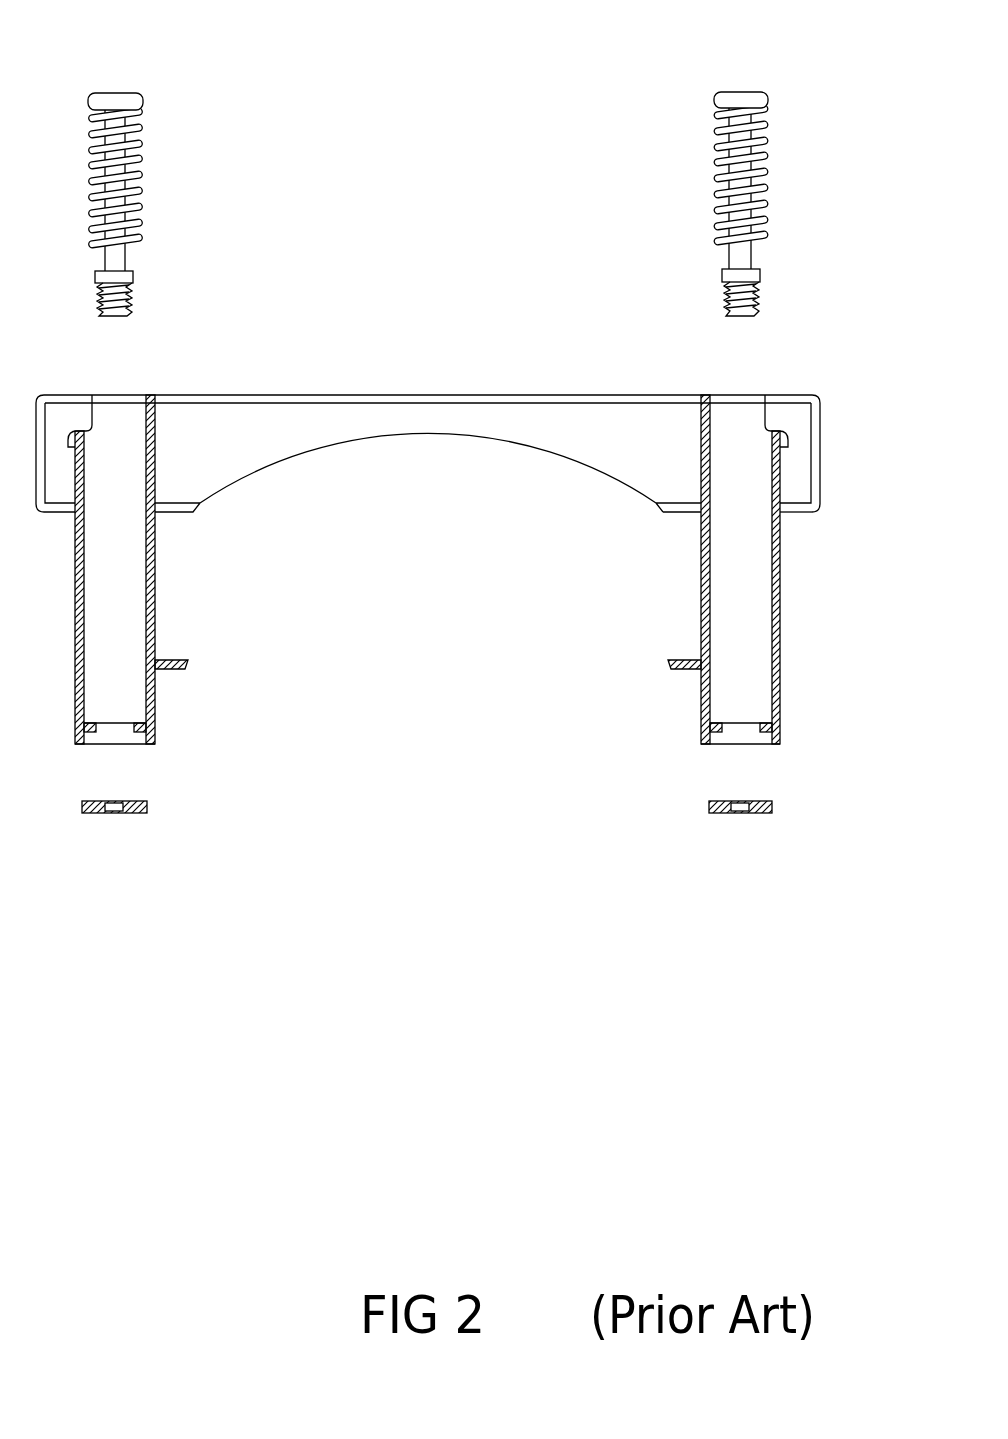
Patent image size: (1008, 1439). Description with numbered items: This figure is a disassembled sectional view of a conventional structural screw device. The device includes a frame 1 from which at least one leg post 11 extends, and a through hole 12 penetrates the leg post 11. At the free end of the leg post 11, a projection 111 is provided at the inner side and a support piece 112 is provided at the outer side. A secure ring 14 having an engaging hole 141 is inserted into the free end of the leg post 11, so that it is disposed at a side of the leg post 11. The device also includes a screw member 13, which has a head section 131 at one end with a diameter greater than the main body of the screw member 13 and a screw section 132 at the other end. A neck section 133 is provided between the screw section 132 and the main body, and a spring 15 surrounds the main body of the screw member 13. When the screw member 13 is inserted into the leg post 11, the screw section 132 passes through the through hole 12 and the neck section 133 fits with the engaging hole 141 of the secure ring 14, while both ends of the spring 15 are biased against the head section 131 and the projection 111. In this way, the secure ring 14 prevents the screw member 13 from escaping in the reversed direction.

The frame 1 is at (487, 418).
The leg post 11 is at (777, 583).
The through hole 12 is at (737, 423).
The projection 111 is at (765, 725).
The support piece 112 is at (683, 657).
The screw member 13 is at (128, 131).
The head section 131 is at (104, 100).
The screw section 132 is at (125, 307).
The neck section 133 is at (120, 262).
The spring 15 is at (132, 176).
The secure ring 14 is at (772, 802).
The engaging hole 141 is at (740, 812).